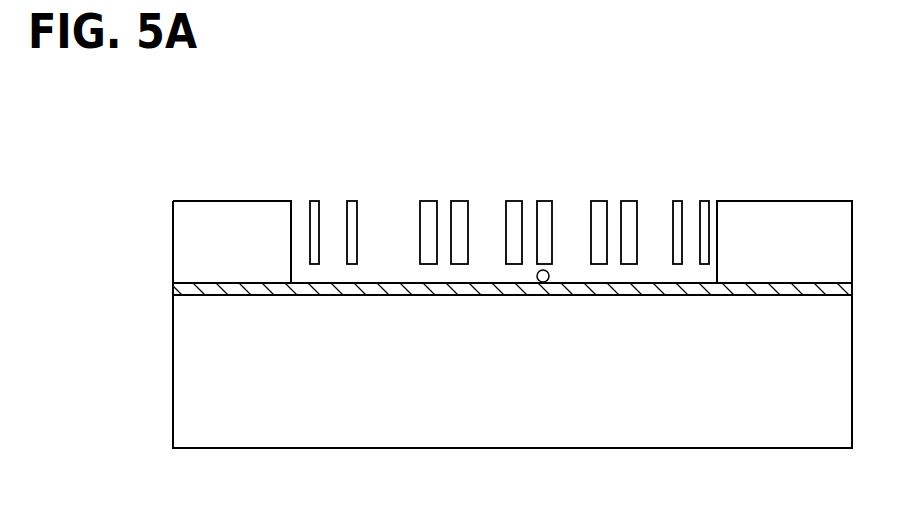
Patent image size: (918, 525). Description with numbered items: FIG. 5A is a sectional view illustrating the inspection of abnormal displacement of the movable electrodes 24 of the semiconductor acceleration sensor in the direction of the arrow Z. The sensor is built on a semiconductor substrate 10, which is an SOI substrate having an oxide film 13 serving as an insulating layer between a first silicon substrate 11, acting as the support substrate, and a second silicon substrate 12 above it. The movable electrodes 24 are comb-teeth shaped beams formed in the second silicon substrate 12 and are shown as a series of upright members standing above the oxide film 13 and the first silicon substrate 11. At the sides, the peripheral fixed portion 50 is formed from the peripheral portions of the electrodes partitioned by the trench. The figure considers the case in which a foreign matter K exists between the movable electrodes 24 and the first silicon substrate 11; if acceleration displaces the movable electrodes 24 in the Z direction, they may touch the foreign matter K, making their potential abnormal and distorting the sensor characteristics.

The semiconductor substrate 10 is at (95, 253).
The first silicon substrate 11 is at (190, 330).
The second silicon substrate 12 is at (190, 265).
The oxide film 13 is at (190, 289).
The movable electrodes 24 is at (543, 210).
The peripheral fixed portion 50 is at (221, 213).
The foreign matter K is at (549, 273).